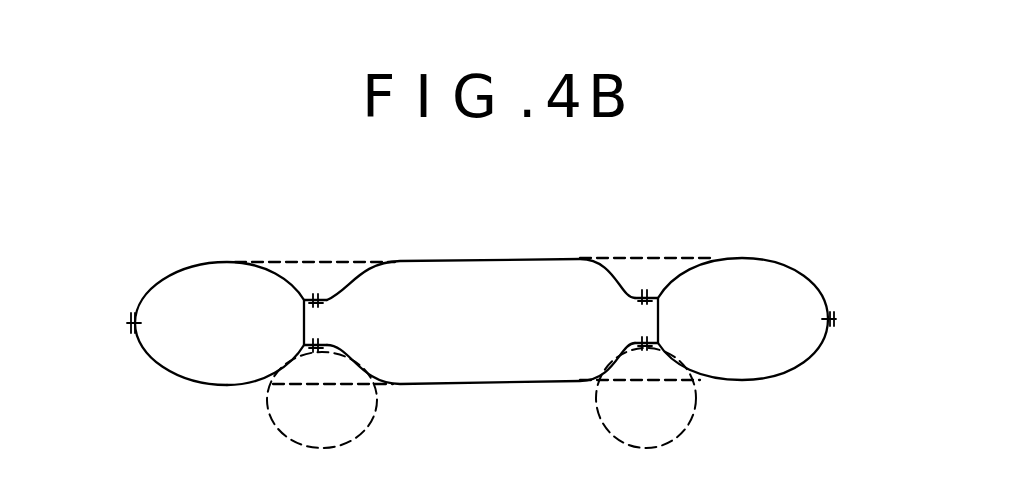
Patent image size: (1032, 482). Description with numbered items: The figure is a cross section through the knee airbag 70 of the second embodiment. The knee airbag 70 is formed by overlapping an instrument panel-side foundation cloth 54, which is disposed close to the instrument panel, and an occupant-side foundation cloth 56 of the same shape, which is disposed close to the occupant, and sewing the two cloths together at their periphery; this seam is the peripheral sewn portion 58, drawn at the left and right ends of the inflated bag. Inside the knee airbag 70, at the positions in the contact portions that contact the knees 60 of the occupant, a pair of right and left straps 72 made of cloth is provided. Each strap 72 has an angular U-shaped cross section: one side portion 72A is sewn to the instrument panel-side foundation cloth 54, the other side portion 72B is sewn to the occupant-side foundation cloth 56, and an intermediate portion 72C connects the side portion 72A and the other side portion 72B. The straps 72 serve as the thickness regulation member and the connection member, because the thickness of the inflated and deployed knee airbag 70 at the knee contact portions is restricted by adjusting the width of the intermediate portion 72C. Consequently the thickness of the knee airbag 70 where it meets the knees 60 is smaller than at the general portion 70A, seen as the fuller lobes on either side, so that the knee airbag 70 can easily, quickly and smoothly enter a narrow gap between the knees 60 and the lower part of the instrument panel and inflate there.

The instrument panel-side foundation cloth 54 is at (188, 263).
The occupant-side foundation cloth 56 is at (205, 388).
The peripheral sewn portion 58 is at (131, 334).
The knees 60 is at (368, 388).
The knee airbag 70 is at (555, 247).
The general portion 70A is at (165, 369).
The strap 72 is at (294, 334).
The one side portion 72A is at (327, 306).
The other side portion 72B is at (324, 347).
The intermediate portion 72C is at (303, 312).